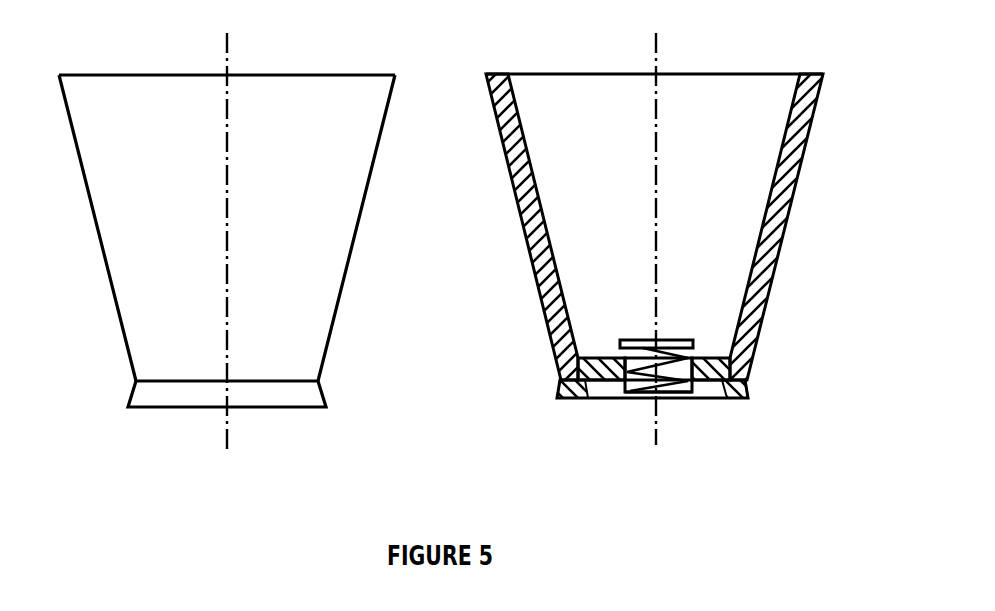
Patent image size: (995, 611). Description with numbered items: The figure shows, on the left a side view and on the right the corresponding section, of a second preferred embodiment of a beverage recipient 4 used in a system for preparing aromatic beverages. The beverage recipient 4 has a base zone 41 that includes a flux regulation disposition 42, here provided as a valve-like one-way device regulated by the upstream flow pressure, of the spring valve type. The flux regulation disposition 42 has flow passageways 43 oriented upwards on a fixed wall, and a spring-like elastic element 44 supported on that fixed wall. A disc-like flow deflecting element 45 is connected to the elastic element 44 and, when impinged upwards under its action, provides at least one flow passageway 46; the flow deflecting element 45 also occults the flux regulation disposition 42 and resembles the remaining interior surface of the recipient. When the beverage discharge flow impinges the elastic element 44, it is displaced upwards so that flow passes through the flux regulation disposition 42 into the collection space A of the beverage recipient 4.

The beverage recipient 4 is at (441, 211).
The collection space A is at (708, 192).
The base zone 41 is at (607, 350).
The flux regulation disposition 42 is at (617, 388).
The flow passageways 43 is at (706, 397).
The elastic element 44 is at (641, 364).
The flow deflecting element 45 is at (685, 335).
The flow passageway 46 is at (328, 392).